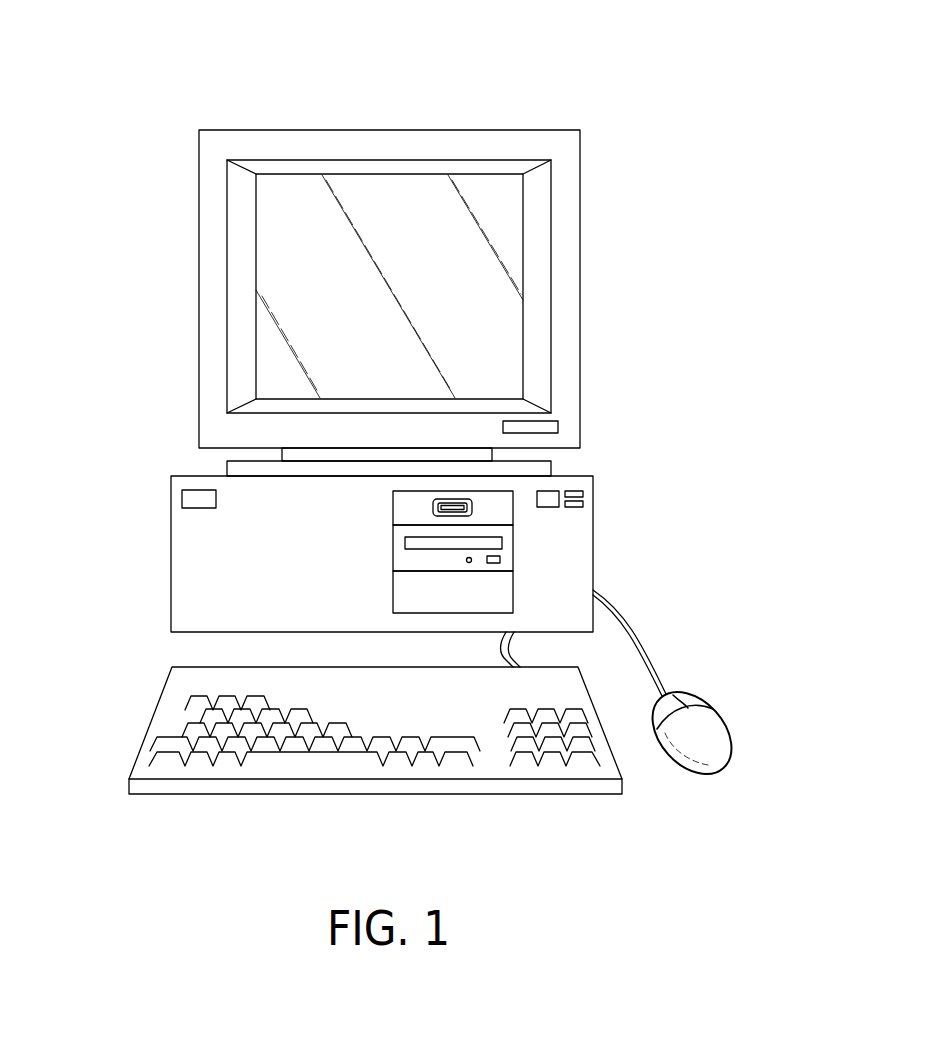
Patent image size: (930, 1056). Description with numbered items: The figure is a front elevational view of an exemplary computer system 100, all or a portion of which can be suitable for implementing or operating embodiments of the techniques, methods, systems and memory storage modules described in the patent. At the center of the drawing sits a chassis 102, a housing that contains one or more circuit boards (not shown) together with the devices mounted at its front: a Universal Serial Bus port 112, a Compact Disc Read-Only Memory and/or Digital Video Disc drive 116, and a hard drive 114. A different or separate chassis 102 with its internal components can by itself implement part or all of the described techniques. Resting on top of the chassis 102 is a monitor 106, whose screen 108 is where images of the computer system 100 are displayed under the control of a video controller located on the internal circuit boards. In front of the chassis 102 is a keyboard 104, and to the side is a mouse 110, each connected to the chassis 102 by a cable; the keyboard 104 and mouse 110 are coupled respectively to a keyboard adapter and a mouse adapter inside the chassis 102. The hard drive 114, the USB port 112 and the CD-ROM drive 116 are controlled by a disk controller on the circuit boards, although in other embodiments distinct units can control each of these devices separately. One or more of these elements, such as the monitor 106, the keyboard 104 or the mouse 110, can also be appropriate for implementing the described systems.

The computer system 100 is at (576, 102).
The chassis 102 is at (171, 556).
The keyboard 104 is at (150, 722).
The monitor 106 is at (275, 130).
The screen 108 is at (305, 293).
The mouse 110 is at (712, 723).
The Universal Serial Bus (USB) port 112 is at (473, 503).
The hard drive 114 is at (503, 592).
The Compact Disc Read-Only Memory (CD-ROM) and/or Digital Video Disc (DVD) drive 116 is at (502, 550).